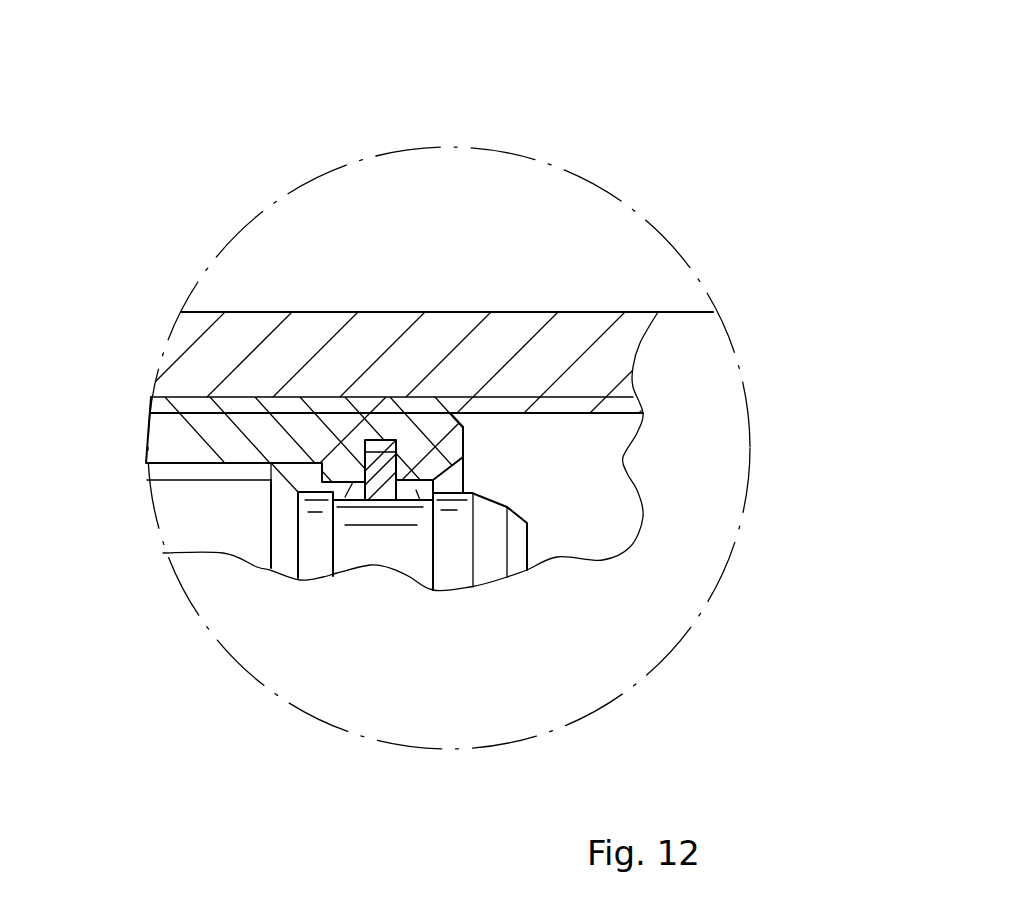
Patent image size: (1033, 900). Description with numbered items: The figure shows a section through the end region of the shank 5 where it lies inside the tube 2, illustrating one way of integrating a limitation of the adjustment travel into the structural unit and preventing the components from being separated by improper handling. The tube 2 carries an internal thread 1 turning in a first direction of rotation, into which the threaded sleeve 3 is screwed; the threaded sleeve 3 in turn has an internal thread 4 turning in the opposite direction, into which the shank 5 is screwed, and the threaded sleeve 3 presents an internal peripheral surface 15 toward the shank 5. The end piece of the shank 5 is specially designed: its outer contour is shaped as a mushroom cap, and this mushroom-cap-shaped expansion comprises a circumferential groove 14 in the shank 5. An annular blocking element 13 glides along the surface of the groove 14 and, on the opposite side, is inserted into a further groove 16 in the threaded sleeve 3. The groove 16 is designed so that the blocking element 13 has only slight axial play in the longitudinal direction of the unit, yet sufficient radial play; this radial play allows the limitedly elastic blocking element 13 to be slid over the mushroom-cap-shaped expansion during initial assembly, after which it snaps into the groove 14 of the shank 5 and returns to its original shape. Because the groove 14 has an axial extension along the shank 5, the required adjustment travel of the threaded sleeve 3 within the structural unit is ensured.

The internal thread 1 is at (615, 403).
The tube 2 is at (285, 335).
The threaded sleeve 3 is at (177, 435).
The internal thread 4 is at (298, 470).
The shank 5 is at (187, 530).
The blocking element 13 is at (450, 412).
The groove 14 is at (430, 482).
The internal peripheral surface 15 is at (347, 492).
The groove 16 is at (385, 440).